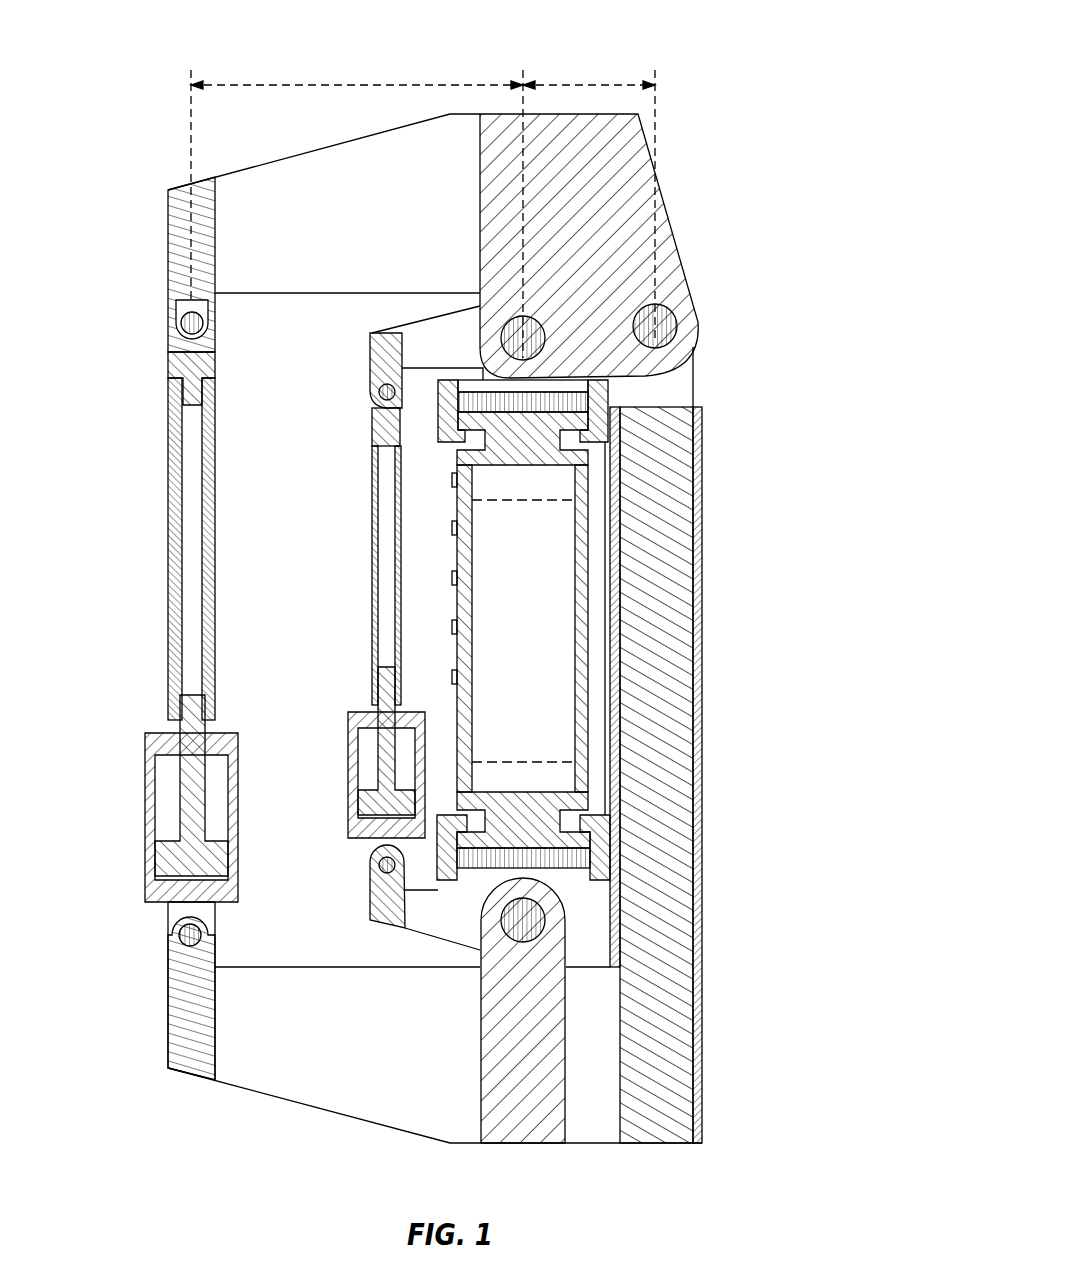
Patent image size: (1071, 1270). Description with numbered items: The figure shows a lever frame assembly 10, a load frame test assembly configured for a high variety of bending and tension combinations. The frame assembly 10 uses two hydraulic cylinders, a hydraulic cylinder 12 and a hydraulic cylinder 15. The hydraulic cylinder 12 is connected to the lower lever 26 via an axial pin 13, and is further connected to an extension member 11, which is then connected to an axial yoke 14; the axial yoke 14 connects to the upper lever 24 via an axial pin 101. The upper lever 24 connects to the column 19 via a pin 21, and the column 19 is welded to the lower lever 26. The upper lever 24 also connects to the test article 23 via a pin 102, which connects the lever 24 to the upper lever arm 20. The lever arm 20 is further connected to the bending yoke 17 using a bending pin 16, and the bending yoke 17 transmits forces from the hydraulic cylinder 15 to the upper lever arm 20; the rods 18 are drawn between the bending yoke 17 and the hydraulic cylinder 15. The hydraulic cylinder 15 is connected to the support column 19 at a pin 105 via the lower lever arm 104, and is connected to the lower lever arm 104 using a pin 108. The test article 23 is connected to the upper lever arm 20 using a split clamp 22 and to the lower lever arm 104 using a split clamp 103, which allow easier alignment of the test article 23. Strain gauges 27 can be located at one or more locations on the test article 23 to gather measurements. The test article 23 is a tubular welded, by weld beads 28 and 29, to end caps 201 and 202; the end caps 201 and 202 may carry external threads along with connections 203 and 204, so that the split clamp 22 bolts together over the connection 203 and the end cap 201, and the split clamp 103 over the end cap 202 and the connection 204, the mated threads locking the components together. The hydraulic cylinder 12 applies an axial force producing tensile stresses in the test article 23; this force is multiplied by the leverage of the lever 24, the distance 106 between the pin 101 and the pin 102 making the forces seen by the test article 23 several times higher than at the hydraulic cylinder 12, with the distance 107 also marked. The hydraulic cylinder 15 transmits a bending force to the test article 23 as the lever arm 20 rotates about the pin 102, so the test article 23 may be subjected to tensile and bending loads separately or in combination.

The lever frame assembly 10 is at (675, 52).
The distance 106 is at (365, 84).
The second distance 107 is at (607, 84).
The upper lever 24 is at (363, 239).
The lower lever 26 is at (363, 1067).
The extension member 11 is at (175, 490).
The axial pin 101 is at (186, 322).
The axial yoke 14 is at (178, 370).
The hydraulic cylinder 12 is at (155, 790).
The axial pin 13 is at (190, 938).
The upper lever arm 20 is at (383, 355).
The bending pin 16 is at (383, 390).
The bending yoke 17 is at (385, 425).
The guide rods 18 is at (375, 465).
The hydraulic cylinder 15 is at (355, 780).
The pin 108 is at (385, 867).
The pin 21 is at (660, 325).
The pin 102 is at (520, 325).
The split clamp 22 is at (600, 413).
The connection 203 is at (570, 402).
The end cap 201 is at (523, 445).
The test article 23 is at (585, 660).
The strain gauges 27 is at (452, 627).
The weld bead 28 is at (538, 500).
The weld bead 29 is at (540, 760).
The end cap 202 is at (523, 812).
The connection 204 is at (565, 862).
The split clamp 103 is at (575, 855).
The lower lever arm 104 is at (592, 903).
The pin 105 is at (523, 920).
The column 19 is at (655, 1078).